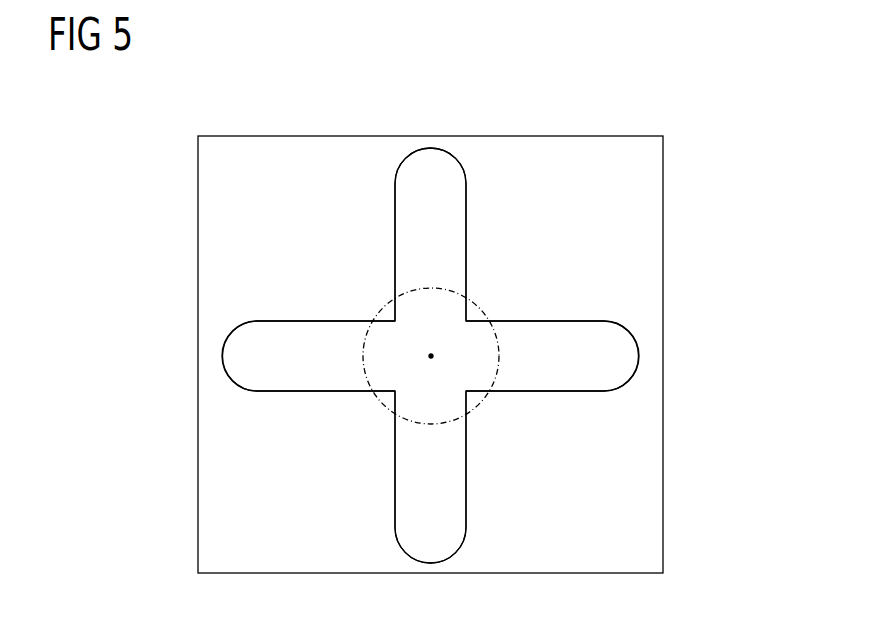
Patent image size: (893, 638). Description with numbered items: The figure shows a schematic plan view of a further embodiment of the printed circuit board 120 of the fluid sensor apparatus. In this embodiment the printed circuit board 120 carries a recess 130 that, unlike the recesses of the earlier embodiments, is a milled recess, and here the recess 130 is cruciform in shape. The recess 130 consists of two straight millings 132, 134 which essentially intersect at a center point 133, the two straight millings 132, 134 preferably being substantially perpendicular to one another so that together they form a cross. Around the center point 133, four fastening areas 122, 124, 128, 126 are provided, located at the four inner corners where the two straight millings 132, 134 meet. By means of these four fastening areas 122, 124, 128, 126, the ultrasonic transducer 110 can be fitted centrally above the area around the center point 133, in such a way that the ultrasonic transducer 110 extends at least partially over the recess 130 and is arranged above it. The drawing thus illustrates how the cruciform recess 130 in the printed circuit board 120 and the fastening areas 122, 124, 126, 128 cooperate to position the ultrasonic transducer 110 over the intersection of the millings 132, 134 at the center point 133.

The ultrasonic transducer 110 is at (474, 305).
The printed circuit board 120 is at (251, 168).
The fastening area 122 is at (391, 316).
The fastening area 124 is at (472, 318).
The fastening area 126 is at (470, 397).
The fastening area 128 is at (390, 400).
The recess 130 is at (486, 209).
The straight milling 132 is at (418, 208).
The center point 133 is at (431, 358).
The straight milling 134 is at (420, 505).